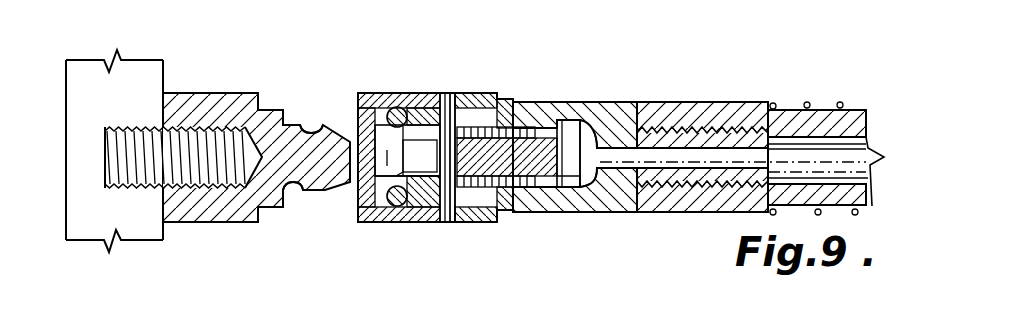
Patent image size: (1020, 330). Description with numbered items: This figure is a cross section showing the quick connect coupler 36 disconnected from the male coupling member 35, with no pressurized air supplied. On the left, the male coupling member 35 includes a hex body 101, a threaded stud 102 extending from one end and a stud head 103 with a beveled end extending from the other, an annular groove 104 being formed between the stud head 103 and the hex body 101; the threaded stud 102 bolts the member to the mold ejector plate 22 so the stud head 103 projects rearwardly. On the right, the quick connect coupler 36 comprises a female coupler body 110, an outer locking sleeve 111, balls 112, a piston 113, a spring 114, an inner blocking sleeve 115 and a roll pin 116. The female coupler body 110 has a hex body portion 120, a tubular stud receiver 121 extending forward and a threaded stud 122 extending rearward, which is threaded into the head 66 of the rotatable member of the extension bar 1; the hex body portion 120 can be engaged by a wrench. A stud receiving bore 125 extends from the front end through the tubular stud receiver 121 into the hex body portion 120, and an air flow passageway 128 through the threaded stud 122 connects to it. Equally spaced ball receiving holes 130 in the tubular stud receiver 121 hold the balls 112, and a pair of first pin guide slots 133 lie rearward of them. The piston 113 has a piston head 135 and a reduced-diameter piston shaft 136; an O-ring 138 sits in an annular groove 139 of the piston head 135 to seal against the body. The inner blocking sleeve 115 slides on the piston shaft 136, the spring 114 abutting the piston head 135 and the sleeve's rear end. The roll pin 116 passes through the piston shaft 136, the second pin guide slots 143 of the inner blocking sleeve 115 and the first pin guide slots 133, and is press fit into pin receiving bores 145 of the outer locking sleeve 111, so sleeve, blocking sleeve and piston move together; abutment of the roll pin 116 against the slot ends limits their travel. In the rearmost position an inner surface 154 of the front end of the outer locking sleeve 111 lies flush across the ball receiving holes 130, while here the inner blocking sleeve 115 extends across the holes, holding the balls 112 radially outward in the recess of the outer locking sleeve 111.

The extension bar 1 is at (820, 110).
The mold ejector plate 22 is at (70, 104).
The male coupling member 35 is at (193, 222).
The quick connect coupler 36 is at (495, 237).
The head of the extension bar rotatable member 66 is at (733, 100).
The hex body 101 is at (200, 93).
The threaded stud 102 is at (128, 188).
The stud head 103 is at (347, 64).
The annular groove 104 is at (295, 195).
The female coupler body 110 is at (530, 101).
The outer locking sleeve 111 is at (462, 93).
The balls 112 is at (400, 128).
The piston 113 is at (555, 192).
The spring 114 is at (508, 110).
The inner blocking sleeve 115 is at (423, 132).
The roll pin 116 is at (448, 222).
The hex body portion 120 is at (590, 100).
The tubular stud receiver 121 is at (407, 200).
The threaded stud 122 is at (697, 187).
The stud receiving bore 125 is at (368, 213).
The air flow passageway 128 is at (669, 160).
The ball receiving holes 130 is at (358, 133).
The first pin guide slots 133 is at (473, 222).
The piston head 135 is at (565, 133).
The piston shaft 136 is at (513, 195).
The O-ring 138 is at (548, 190).
The annular groove 139 is at (542, 127).
The second pin guide slots 143 is at (422, 203).
The pin receiving bores 145 is at (440, 97).
The inner surface 154 is at (358, 194).